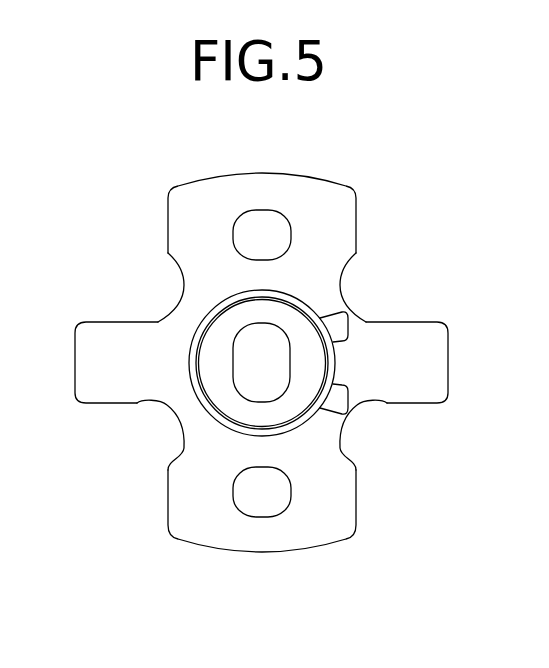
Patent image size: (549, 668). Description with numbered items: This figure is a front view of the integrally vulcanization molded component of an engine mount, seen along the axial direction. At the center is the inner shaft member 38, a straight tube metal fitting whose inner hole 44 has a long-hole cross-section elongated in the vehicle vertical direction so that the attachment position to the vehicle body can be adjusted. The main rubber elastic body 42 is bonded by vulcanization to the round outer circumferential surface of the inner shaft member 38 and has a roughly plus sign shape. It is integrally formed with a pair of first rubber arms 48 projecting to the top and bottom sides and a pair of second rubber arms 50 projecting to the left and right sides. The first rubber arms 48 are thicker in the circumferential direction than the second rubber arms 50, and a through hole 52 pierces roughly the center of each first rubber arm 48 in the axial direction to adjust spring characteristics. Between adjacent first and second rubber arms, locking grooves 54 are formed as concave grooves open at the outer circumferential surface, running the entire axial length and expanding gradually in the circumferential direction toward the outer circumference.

The inner shaft member 38 is at (302, 357).
The main rubber elastic body 42 is at (269, 349).
The inner hole 44 is at (264, 397).
The first rubber arms 48 is at (198, 230).
The second rubber arms 50 is at (427, 368).
The through hole 52 is at (263, 221).
The locking grooves 54 is at (158, 321).